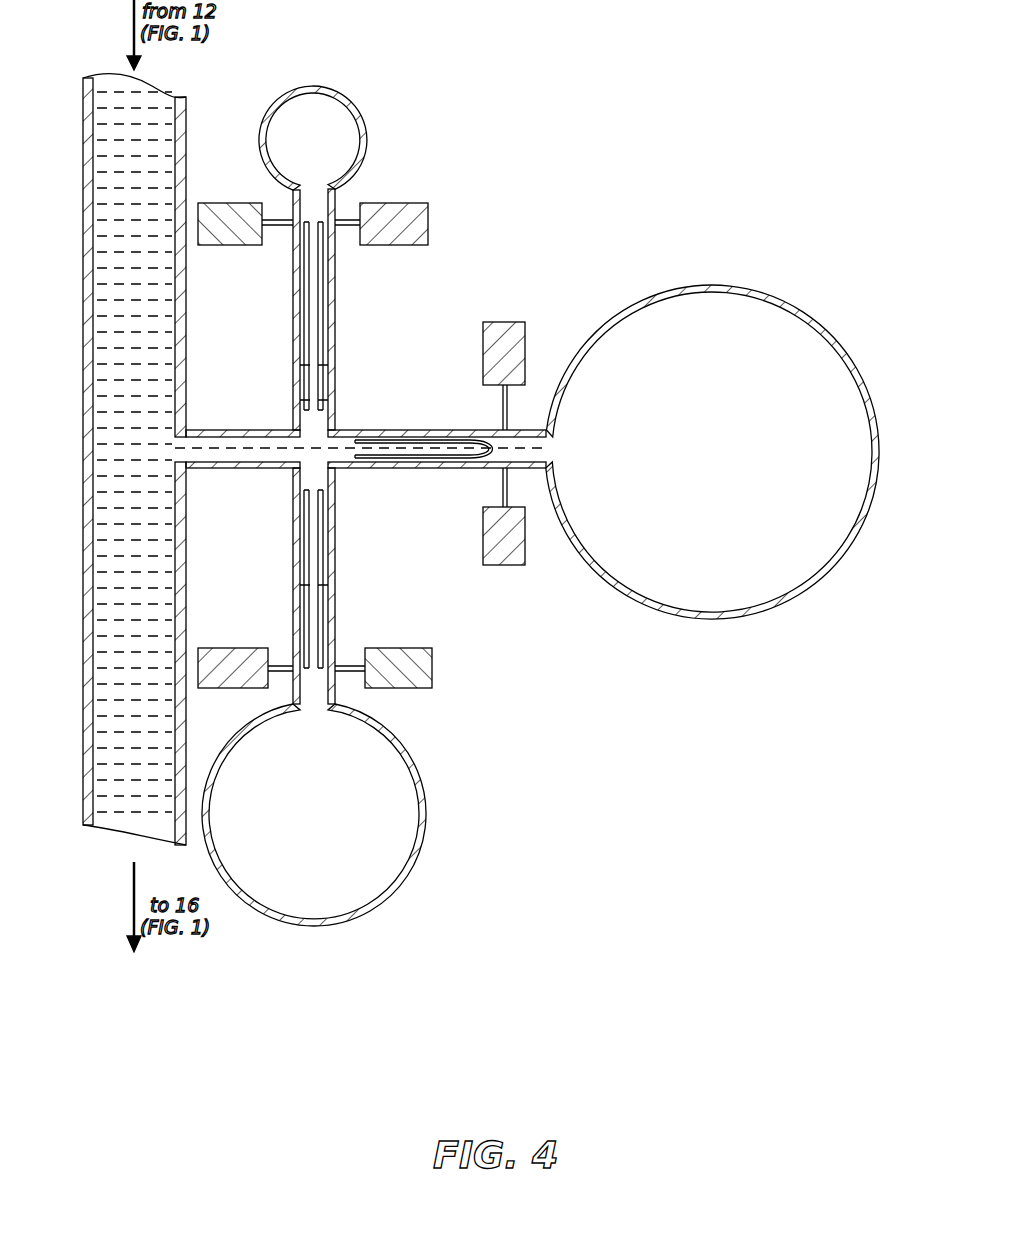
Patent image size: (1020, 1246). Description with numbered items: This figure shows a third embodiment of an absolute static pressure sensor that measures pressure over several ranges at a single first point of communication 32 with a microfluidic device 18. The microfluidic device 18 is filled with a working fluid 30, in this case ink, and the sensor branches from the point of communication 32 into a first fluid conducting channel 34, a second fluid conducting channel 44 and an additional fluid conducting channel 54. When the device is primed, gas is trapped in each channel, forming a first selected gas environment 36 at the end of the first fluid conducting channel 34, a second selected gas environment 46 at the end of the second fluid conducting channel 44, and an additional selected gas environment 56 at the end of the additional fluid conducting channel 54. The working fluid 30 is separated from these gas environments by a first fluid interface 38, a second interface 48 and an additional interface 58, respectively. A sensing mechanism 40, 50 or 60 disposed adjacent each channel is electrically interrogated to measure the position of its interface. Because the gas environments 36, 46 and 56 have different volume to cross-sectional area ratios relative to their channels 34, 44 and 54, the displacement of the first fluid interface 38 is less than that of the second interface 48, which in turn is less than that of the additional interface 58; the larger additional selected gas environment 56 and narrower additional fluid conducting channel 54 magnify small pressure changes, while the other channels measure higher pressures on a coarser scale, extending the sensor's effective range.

The microfluidic device 18 is at (83, 392).
The working fluid 30 is at (128, 182).
The first point of communication 32 is at (180, 450).
The first fluid conducting channel 34 is at (322, 300).
The first selected gas environment 36 is at (332, 147).
The first fluid interface 38 is at (330, 345).
The sensing mechanism 40 is at (322, 270).
The second fluid conducting channel 44 is at (335, 522).
The second selected gas environment 46 is at (352, 818).
The second interface 48 is at (330, 600).
The sensing mechanism 50 is at (330, 585).
The additional fluid conducting channel 54 is at (405, 430).
The additional selected gas environment 56 is at (716, 316).
The additional interface 58 is at (486, 430).
The sensing mechanism 60 is at (437, 430).